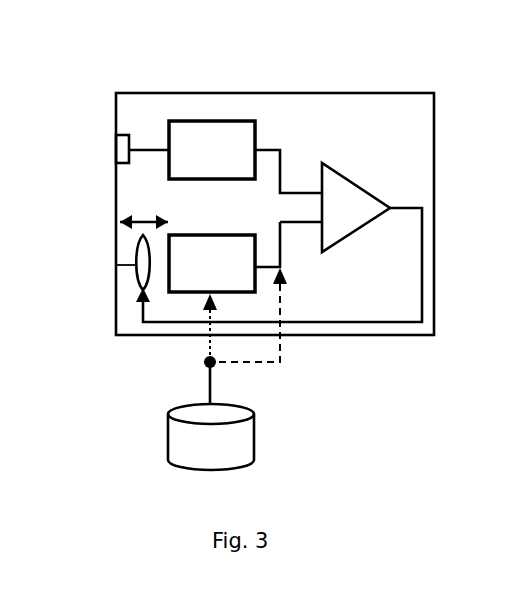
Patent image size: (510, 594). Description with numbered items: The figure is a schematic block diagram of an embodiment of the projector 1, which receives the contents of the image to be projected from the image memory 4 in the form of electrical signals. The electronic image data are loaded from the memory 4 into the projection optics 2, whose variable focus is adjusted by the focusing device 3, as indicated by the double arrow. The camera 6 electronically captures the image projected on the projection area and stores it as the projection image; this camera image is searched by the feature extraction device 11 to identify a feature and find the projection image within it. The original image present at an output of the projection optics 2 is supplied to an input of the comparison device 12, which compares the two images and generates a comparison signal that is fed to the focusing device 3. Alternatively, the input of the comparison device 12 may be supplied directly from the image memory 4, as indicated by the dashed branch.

The projector 1 is at (313, 92).
The feature extraction device 11 is at (197, 121).
The comparison device 12 is at (381, 192).
The camera 6 is at (116, 150).
The focusing device 3 is at (116, 266).
The projection optics 2 is at (257, 288).
The memory 4 is at (255, 432).